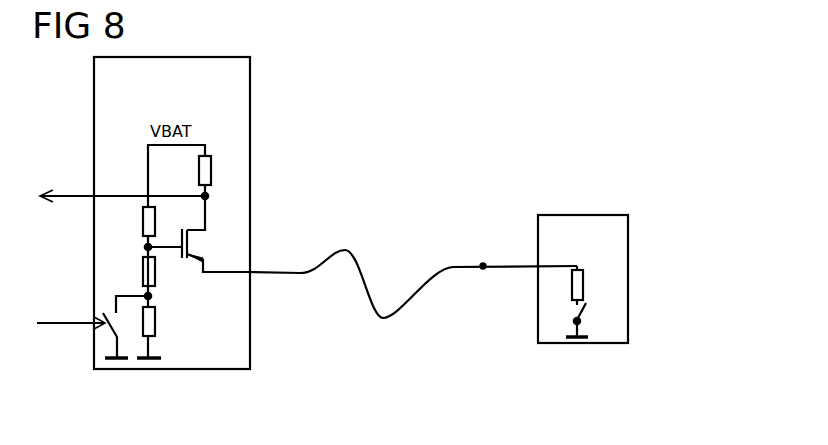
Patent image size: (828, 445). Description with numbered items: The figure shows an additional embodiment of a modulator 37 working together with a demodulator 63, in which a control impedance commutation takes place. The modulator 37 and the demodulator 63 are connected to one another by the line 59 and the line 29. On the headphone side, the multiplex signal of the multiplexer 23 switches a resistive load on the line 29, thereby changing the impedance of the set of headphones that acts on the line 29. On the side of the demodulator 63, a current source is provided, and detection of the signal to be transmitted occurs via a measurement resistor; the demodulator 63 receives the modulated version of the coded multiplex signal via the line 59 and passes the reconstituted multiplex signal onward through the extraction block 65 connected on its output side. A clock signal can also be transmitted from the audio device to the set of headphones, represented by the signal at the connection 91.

The demodulator 63 is at (250, 100).
The extraction block 65 is at (106, 197).
The connection 91 is at (96, 327).
The line 59 is at (280, 272).
The line 29 is at (483, 266).
The modulator 37 is at (628, 245).
The multiplexer 23 is at (592, 309).